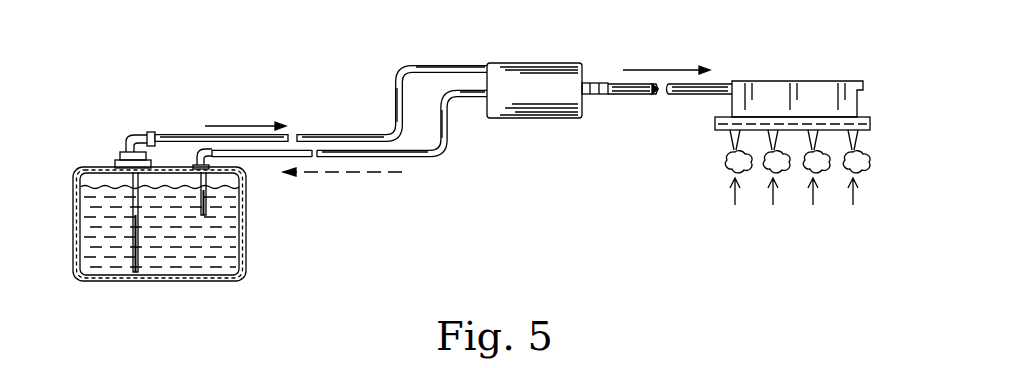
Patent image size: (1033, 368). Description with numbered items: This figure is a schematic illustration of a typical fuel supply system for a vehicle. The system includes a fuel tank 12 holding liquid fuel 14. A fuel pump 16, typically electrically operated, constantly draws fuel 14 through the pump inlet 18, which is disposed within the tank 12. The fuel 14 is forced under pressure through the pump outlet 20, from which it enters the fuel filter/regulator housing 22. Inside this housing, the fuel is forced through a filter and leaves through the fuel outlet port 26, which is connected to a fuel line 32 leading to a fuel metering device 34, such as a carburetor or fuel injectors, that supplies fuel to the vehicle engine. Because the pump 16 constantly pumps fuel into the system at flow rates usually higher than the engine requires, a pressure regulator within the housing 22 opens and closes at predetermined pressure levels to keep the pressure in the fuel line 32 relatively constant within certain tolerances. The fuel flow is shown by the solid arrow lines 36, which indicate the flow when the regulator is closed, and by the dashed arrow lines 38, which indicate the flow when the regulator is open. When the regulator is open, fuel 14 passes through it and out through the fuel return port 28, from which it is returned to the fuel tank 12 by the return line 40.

The fuel tank 12 is at (233, 224).
The liquid fuel 14 is at (245, 254).
The fuel pump 16 is at (121, 150).
The pump inlet 18 is at (156, 257).
The pump outlet 20 is at (182, 134).
The fuel filter/regulator housing 22 is at (549, 64).
The fuel outlet port 26 is at (592, 80).
The fuel return port 28 is at (481, 97).
The fuel line 32 is at (633, 94).
The fuel metering device 34 is at (820, 82).
The solid arrow lines 36 is at (243, 126).
The dashed arrow lines 38 is at (368, 172).
The return line 40 is at (441, 155).